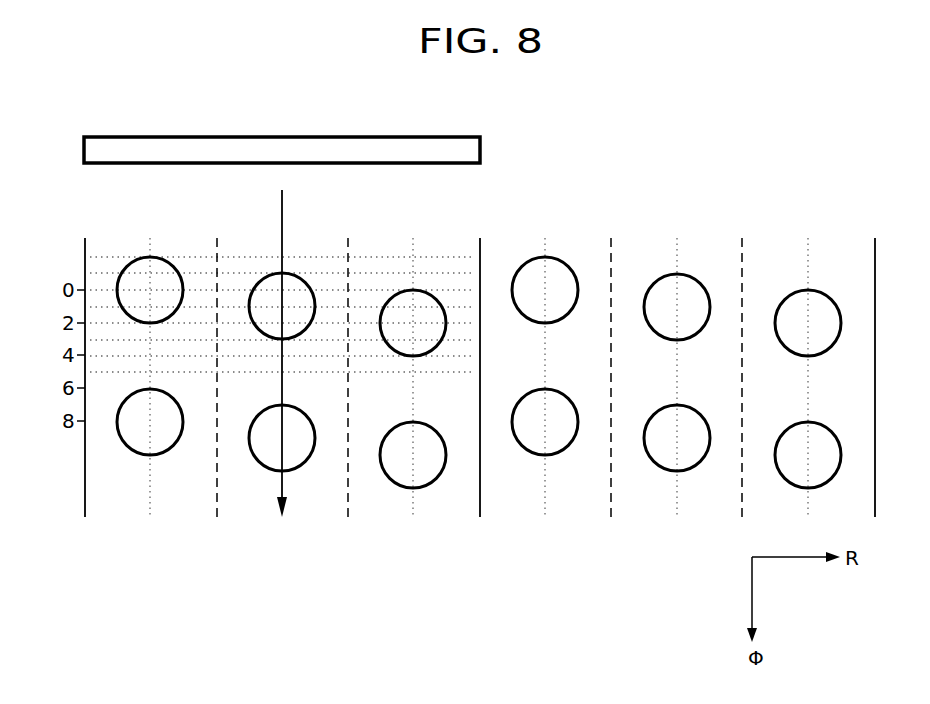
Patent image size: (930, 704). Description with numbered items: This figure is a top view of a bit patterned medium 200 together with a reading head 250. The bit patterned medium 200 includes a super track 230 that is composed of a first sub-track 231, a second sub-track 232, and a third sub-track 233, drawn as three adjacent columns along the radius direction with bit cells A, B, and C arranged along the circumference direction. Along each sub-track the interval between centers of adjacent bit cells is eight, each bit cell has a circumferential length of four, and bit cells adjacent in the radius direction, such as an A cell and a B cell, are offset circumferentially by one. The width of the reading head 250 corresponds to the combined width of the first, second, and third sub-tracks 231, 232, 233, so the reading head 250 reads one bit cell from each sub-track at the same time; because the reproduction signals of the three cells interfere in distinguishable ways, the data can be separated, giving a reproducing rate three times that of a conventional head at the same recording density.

The bit patterned medium 200 is at (752, 196).
The super track 230 is at (443, 570).
The first sub-track 231 is at (179, 500).
The second sub-track 232 is at (311, 500).
The third sub-track 233 is at (443, 500).
The reading head 250 is at (480, 150).